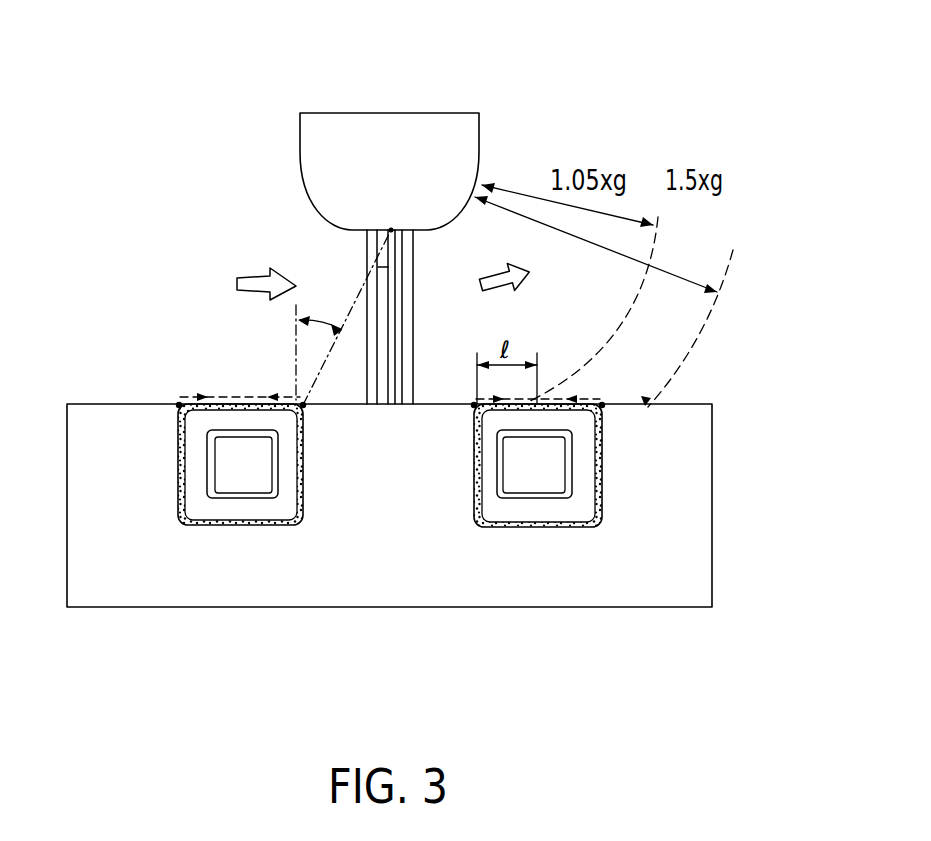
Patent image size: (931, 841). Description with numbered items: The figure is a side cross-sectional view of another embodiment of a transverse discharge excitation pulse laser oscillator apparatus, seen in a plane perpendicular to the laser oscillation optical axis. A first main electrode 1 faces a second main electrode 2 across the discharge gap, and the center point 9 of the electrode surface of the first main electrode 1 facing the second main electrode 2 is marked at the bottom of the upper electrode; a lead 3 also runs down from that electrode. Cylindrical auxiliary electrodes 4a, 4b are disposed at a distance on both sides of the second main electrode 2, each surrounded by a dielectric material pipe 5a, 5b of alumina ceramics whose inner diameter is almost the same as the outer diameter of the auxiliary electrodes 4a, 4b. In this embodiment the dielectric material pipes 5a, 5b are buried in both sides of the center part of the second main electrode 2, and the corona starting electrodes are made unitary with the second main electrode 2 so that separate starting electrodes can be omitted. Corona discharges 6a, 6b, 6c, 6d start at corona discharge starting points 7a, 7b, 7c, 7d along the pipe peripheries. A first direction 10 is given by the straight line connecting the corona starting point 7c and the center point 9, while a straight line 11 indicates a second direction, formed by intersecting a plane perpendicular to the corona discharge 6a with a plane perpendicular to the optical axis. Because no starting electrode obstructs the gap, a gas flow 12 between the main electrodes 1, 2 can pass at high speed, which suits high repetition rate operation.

The first main electrode 1 is at (322, 157).
The second main electrode 2 is at (273, 572).
The wire 3 is at (367, 261).
The auxiliary electrode 4a is at (240, 470).
The auxiliary electrode 4b is at (522, 482).
The dielectric material pipe 5a is at (252, 508).
The dielectric material pipe 5b is at (573, 513).
The corona discharge 6a is at (267, 396).
The corona discharge 6b is at (212, 397).
The corona discharge 6c is at (523, 400).
The corona discharge 6d is at (588, 400).
The corona discharge starting point 7a is at (312, 397).
The corona discharge starting point 7b is at (178, 402).
The corona discharge starting point 7c is at (474, 405).
The corona discharge starting point 7d is at (648, 400).
The center point 9 is at (391, 230).
The first direction 10 is at (367, 277).
The straight line 11 is at (296, 323).
The gas flow 12 is at (492, 272).